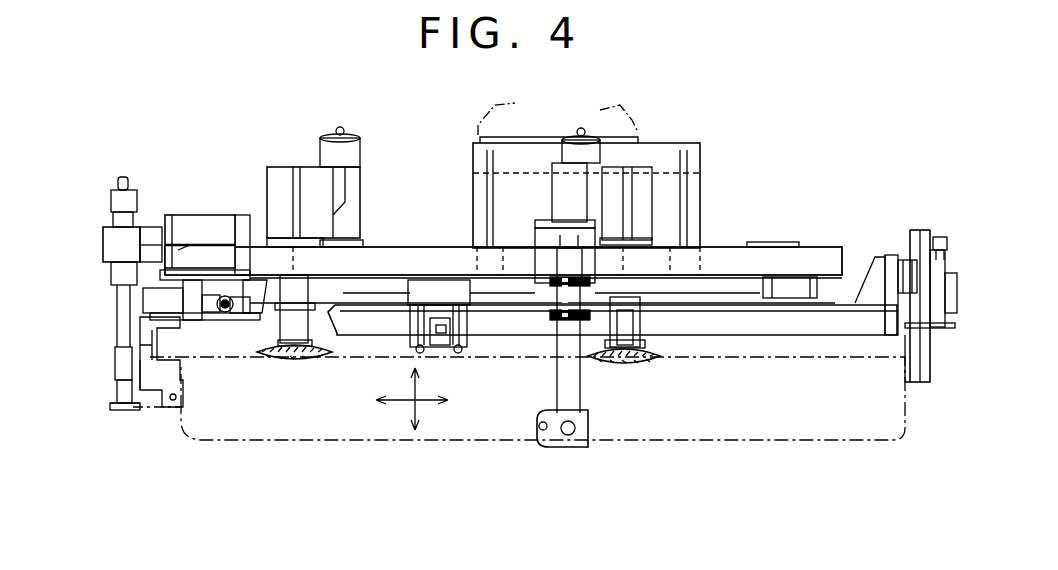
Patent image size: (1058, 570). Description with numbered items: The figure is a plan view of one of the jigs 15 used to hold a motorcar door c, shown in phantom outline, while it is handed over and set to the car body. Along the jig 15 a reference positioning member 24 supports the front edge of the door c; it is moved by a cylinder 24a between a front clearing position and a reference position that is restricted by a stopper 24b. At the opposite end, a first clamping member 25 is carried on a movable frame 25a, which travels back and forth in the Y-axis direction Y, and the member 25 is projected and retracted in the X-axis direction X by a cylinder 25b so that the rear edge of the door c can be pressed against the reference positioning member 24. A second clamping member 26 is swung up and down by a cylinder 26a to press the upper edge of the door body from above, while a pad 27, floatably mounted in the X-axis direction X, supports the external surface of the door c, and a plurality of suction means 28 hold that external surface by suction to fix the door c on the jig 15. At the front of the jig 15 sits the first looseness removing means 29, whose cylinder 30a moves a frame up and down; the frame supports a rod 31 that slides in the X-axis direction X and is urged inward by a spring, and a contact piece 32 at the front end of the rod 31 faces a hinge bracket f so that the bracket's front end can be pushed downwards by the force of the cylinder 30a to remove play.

The jig 15 is at (836, 234).
The reference positioning member 24 is at (160, 390).
The cylinder 24a is at (163, 306).
The stopper 24b is at (248, 262).
The first clamping member 25 is at (912, 372).
The movable frame 25a is at (695, 326).
The cylinder 25b is at (937, 284).
The second clamping member 26 is at (589, 434).
The cylinder 26a is at (560, 177).
The pad 27 is at (452, 352).
The suction means 28 is at (297, 360).
The first looseness removing means 29 is at (124, 421).
The cylinder 30a is at (138, 232).
The rod 31 is at (162, 230).
The contact piece 32 is at (128, 412).
The hinge bracket f is at (178, 418).
The door c is at (302, 446).
The X-axis direction X is at (413, 407).
The Y-axis direction Y is at (420, 397).